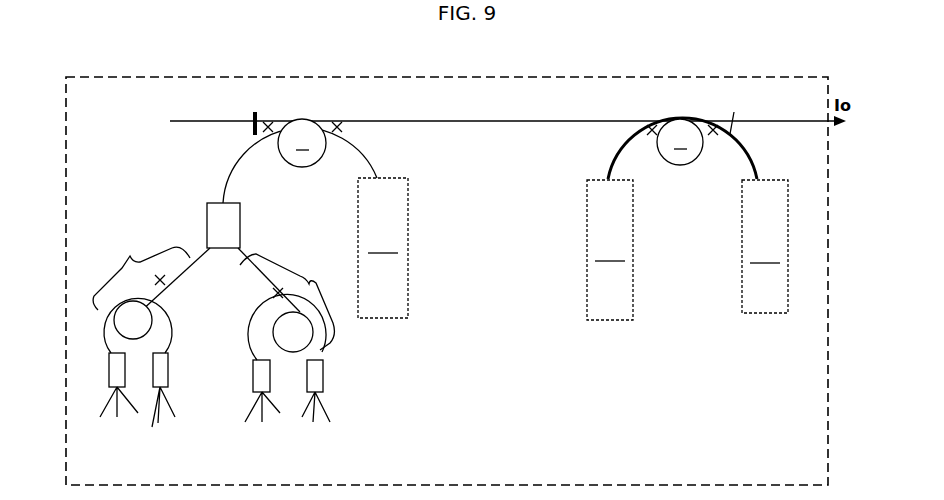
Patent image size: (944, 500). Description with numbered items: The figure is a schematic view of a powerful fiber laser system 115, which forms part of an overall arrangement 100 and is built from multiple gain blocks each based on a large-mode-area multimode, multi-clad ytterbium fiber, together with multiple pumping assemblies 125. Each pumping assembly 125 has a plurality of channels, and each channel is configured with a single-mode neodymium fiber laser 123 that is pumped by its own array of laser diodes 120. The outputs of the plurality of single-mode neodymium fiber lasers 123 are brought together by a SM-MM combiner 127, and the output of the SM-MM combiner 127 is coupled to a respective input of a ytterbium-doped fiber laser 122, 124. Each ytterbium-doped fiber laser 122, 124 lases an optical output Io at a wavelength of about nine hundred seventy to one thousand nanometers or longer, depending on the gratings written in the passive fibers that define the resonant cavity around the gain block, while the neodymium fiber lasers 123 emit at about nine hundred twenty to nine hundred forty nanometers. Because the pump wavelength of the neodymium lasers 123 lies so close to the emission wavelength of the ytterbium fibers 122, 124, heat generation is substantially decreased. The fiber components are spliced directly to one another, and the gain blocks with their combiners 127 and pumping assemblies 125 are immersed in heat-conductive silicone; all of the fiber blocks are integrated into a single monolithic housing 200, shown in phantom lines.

The communication system 100 is at (106, 5).
The powerful fiber laser system 115 is at (414, 69).
The array of laser diodes 120 is at (100, 413).
The YbDFL 122 is at (295, 143).
The SM Nd fiber laser 123 is at (134, 300).
The YbDFL 124 is at (669, 142).
The pumping assembly 125 is at (212, 407).
The SM-MM combiner 127 is at (210, 223).
The housing 200 is at (525, 436).